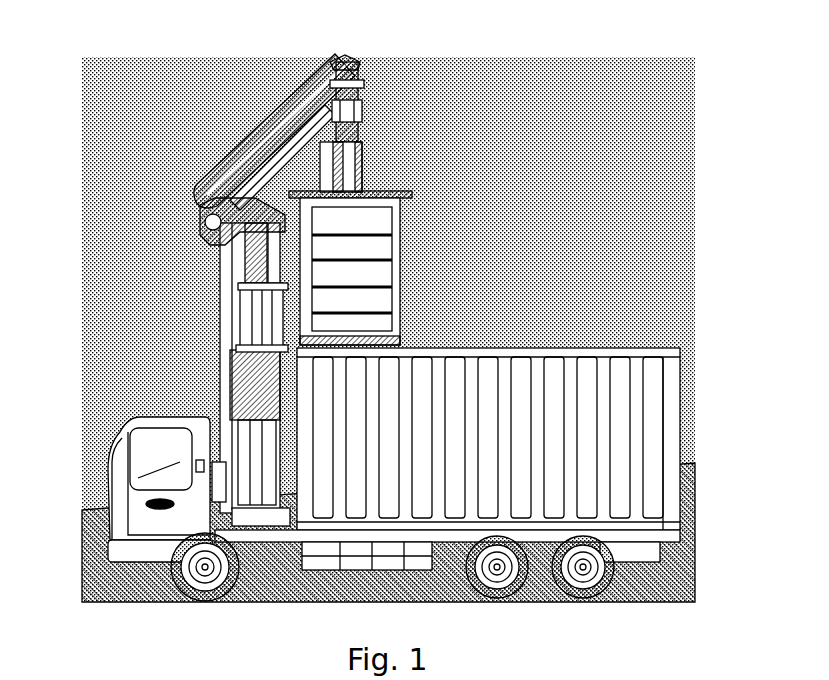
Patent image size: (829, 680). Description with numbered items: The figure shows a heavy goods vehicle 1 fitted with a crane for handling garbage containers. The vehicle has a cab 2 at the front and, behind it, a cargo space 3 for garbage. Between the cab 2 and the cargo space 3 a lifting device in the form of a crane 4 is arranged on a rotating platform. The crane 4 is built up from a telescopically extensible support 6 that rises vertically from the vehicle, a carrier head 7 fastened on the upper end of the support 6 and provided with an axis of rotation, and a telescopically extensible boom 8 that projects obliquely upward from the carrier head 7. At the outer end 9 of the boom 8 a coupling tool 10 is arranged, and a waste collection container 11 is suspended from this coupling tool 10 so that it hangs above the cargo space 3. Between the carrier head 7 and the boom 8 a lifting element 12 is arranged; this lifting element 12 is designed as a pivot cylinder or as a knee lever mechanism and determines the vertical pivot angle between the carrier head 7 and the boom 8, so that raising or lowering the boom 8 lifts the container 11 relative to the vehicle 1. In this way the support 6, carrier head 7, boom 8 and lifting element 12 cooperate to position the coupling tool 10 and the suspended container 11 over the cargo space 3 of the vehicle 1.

The heavy goods vehicle 1 is at (78, 596).
The cab 2 is at (125, 503).
The cargo space 3 is at (660, 444).
The crane 4 is at (180, 278).
The telescopically extensible support 6 is at (250, 318).
The carrier head 7 is at (233, 213).
The telescopically extensible boom 8 is at (253, 127).
The outer end of the boom 9 is at (343, 53).
The coupling tool 10 is at (350, 110).
The waste collection container 11 is at (375, 248).
The lifting element 12 is at (257, 177).